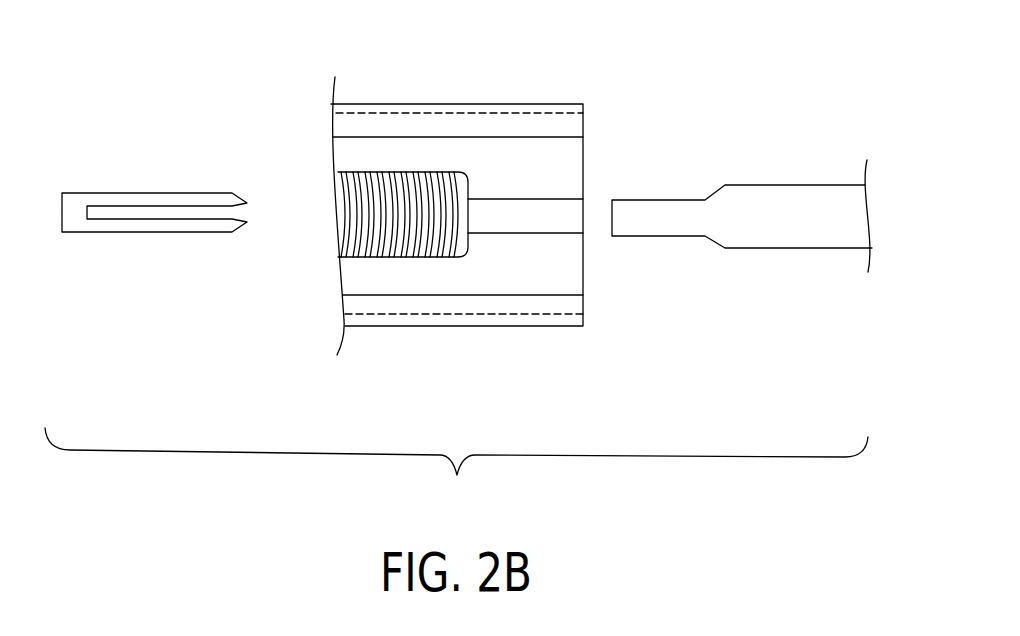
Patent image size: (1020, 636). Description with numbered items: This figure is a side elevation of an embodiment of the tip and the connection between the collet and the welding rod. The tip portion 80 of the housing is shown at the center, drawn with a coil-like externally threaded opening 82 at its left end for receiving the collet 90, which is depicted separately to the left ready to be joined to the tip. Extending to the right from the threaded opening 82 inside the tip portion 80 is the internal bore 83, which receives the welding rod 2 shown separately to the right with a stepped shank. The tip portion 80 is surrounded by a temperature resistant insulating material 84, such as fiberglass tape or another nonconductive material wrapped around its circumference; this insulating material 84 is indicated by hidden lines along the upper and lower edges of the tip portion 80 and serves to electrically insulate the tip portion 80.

The tip portion 80 is at (377, 103).
The insulating material 84 is at (502, 103).
The externally threaded opening 82 is at (366, 190).
The internal bore 83 is at (527, 212).
The collet 90 is at (181, 233).
The welding rod 2 is at (672, 237).